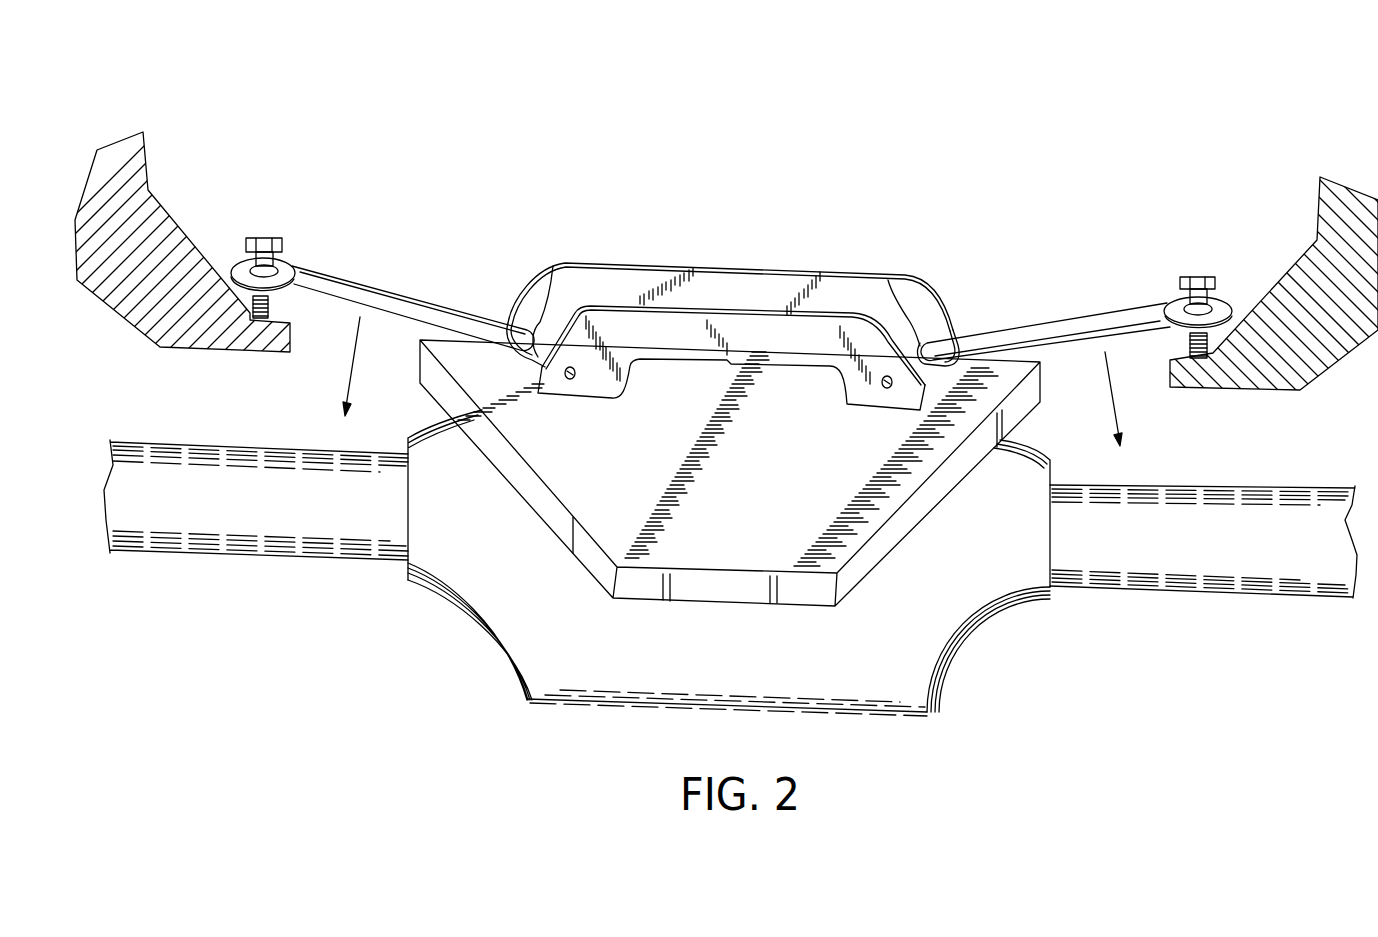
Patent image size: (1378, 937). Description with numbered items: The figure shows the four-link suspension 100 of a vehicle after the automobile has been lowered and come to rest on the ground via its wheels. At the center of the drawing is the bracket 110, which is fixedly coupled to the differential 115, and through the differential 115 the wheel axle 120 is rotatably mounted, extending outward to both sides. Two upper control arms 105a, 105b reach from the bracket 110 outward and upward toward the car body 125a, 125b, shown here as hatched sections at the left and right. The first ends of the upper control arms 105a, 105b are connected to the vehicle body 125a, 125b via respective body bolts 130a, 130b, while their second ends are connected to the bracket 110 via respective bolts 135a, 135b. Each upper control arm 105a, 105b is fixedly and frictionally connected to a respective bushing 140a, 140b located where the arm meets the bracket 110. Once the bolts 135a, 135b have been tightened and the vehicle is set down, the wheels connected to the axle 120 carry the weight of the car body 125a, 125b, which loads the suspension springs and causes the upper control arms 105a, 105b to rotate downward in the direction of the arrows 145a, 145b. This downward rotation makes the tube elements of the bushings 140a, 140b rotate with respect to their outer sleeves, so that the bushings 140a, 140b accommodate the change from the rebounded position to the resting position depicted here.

The four-link suspension 100 is at (956, 100).
The upper control arm 105a is at (418, 297).
The upper control arm 105b is at (1043, 323).
The bracket 110 is at (762, 340).
The differential 115 is at (513, 603).
The wheel axle 120 is at (1200, 573).
The car body 125a is at (140, 182).
The car body 125b is at (1320, 232).
The body bolt 130a is at (266, 236).
The body bolt 130b is at (1190, 276).
The bolt 135a is at (573, 379).
The bolt 135b is at (885, 387).
The bushing 140a is at (575, 264).
The bushing 140b is at (888, 280).
The arrow 145a is at (346, 383).
The arrow 145b is at (1120, 418).